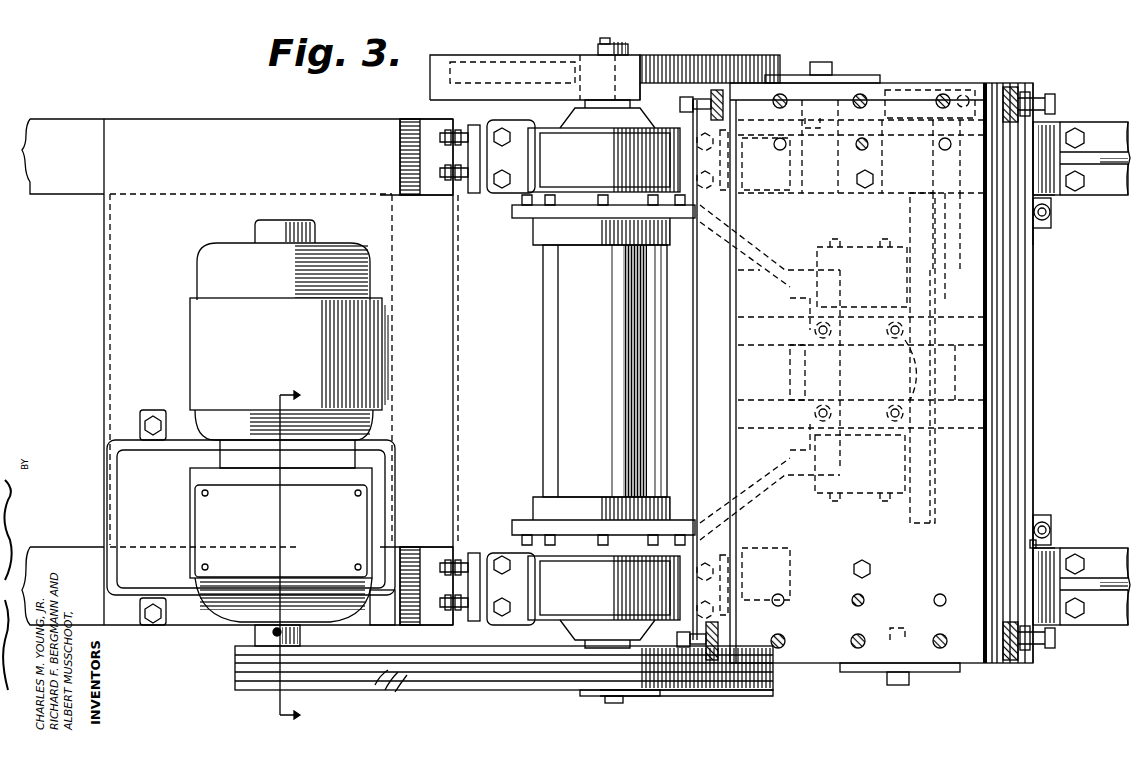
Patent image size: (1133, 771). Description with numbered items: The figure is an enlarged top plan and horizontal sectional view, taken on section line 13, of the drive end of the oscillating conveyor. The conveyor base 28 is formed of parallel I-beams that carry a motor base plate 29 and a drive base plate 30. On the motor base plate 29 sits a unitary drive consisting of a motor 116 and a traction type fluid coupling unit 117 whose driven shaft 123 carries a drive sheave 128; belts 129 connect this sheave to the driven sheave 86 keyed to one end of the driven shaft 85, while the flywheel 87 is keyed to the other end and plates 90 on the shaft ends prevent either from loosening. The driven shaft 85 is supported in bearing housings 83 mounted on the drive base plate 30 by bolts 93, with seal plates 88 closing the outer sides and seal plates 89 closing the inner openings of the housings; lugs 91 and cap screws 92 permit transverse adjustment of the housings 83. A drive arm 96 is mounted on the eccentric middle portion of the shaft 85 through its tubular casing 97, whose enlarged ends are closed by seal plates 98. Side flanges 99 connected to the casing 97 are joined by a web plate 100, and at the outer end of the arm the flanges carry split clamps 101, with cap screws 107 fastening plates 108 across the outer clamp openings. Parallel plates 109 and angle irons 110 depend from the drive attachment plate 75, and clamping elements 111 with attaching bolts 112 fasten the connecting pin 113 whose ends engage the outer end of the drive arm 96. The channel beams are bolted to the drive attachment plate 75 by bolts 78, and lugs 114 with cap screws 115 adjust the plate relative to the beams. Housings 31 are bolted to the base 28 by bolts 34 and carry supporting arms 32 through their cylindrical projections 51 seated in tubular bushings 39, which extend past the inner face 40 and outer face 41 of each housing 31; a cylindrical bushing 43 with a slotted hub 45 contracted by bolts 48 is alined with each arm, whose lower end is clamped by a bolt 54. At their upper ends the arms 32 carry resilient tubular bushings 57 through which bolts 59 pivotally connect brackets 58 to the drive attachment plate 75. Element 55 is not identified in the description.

The section line 13 is at (300, 552).
The conveyor base 28 is at (432, 208).
The motor base plate 29 is at (104, 285).
The drive base plate 30 is at (455, 346).
The housing 31 is at (1040, 196).
The supporting arm 32 is at (912, 88).
The bolt 34 is at (1082, 128).
The tubular bushing 39 is at (1034, 541).
The inner face 40 is at (1046, 215).
The outer face 41 is at (1050, 122).
The cylindrical bushing 43 is at (1043, 238).
The hub 45 is at (945, 520).
The bolt 48 is at (1045, 220).
The cylindrical projection 51 is at (930, 104).
The bolt 54 is at (962, 94).
The rail 55 is at (940, 260).
The resilient tubular bushing 57 is at (861, 386).
The bracket 58 is at (848, 75).
The bolt 59 is at (818, 62).
The drive attachment plate 75 is at (822, 665).
The bolt 78 is at (782, 95).
The bearing housing 83 is at (515, 194).
The driven shaft 85 is at (575, 103).
The driven sheave 86 is at (668, 690).
The flywheel 87 is at (770, 55).
The seal plate 88 is at (645, 118).
The seal plate 89 is at (600, 180).
The plate 90 is at (618, 52).
The lug 91 is at (474, 193).
The cap screw 92 is at (440, 140).
The bolt 93 is at (506, 140).
The drive arm 96 is at (555, 333).
The tubular casing 97 is at (565, 402).
The seal plate 98 is at (603, 370).
The side flange 99 is at (770, 372).
The web plate 100 is at (660, 362).
The split clamp 101 is at (795, 262).
The cap screw 107 is at (855, 247).
The plate 108 is at (826, 240).
The parallel plate 109 is at (960, 345).
The angle iron 110 is at (700, 335).
The clamping element 111 is at (922, 370).
The attaching bolt 112 is at (900, 340).
The connecting pin 113 is at (842, 376).
The lug 114 is at (716, 88).
The cap screw 115 is at (686, 95).
The motor 116 is at (190, 333).
The fluid coupling unit 117 is at (185, 529).
The driven shaft 123 is at (258, 640).
The drive sheave 128 is at (258, 690).
The belt 129 is at (391, 695).